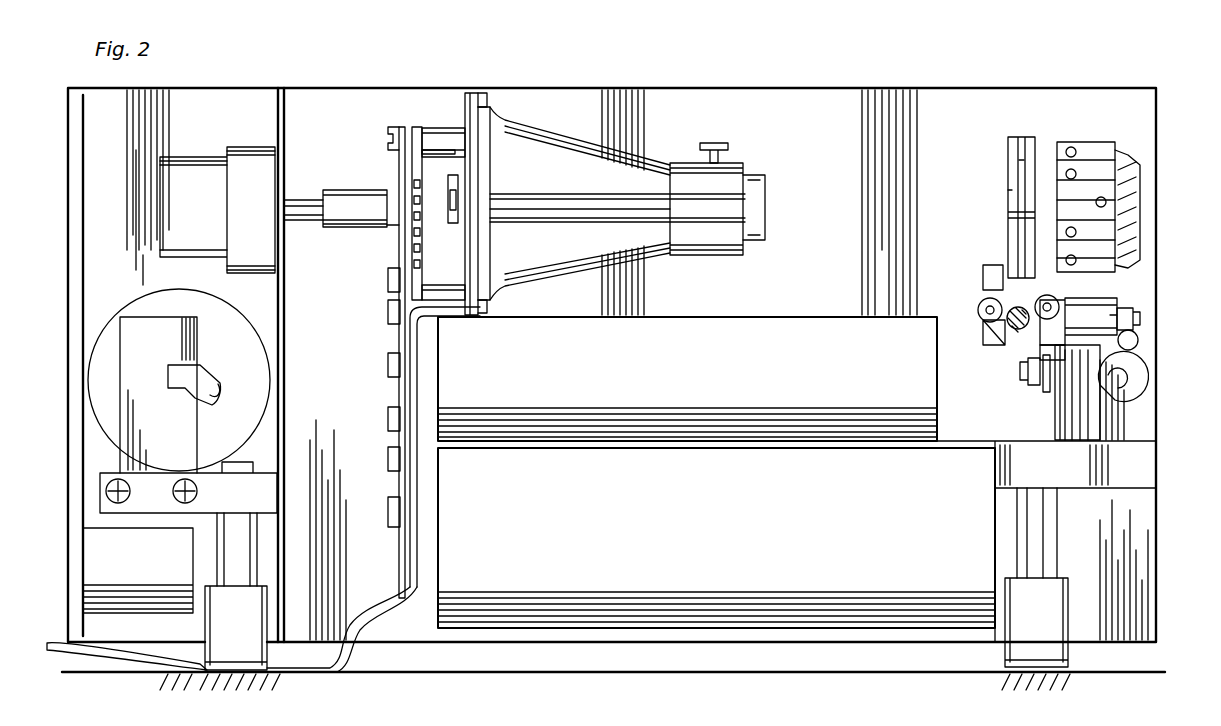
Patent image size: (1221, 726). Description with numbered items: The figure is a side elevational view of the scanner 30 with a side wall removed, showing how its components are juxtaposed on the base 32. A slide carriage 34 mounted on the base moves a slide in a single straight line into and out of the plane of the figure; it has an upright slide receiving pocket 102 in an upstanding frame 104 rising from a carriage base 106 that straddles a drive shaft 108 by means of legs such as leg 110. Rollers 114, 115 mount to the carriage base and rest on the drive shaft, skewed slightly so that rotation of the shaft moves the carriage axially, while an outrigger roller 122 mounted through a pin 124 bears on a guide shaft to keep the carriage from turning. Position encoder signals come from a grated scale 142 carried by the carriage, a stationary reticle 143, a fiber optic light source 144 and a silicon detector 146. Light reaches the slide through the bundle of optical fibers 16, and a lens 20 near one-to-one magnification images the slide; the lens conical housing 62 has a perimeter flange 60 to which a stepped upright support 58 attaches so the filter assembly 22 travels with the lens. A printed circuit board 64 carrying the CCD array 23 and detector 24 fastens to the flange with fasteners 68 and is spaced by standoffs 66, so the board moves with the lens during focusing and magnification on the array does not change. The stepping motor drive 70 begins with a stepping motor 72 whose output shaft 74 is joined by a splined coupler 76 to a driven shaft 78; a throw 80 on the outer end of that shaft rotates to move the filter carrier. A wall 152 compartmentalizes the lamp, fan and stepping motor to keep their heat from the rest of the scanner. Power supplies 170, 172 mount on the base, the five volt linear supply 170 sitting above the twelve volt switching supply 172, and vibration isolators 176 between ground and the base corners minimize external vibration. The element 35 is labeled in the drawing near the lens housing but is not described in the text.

The bundle of optical fibers 16 is at (1140, 180).
The lens 20 is at (752, 207).
The filter assembly 22 is at (472, 112).
The CCD array 23 is at (422, 150).
The detector 24 is at (414, 140).
The scanner 30 is at (746, 106).
The base 32 is at (663, 88).
The slide carriage 34 is at (603, 153).
The lens housing 35 is at (712, 193).
The support 58 is at (421, 556).
The perimeter flange 60 is at (480, 118).
The lens conical housing 62 is at (500, 142).
The printed circuit board 64 is at (462, 128).
The standoffs 66 is at (442, 128).
The fasteners 68 is at (388, 147).
The stepping motor drive 70 is at (302, 185).
The stepping motor 72 is at (247, 160).
The output shaft 74 is at (301, 213).
The splined coupler 76 is at (343, 205).
The driven shaft 78 is at (402, 228).
The throw 80 is at (450, 190).
The slide receiving pocket 102 is at (1020, 165).
The upstanding frame 104 is at (1008, 192).
The carriage base 106 is at (983, 270).
The drive shaft 108 is at (1018, 329).
The leg 110 is at (983, 333).
The roller 114 is at (984, 300).
The roller 115 is at (1062, 290).
The roller 122 is at (1134, 318).
The pin 124 is at (1117, 303).
The grated scale 142 is at (1042, 346).
The reticle 143 is at (1043, 385).
The light source 144 is at (1140, 373).
The silicon detector 146 is at (1030, 370).
The wall 152 is at (283, 380).
The power supply 170 is at (690, 381).
The power supply 172 is at (688, 543).
The vibration isolators 176 is at (250, 530).